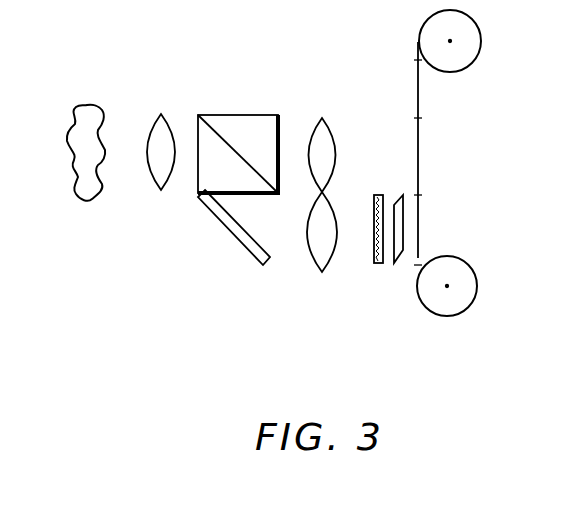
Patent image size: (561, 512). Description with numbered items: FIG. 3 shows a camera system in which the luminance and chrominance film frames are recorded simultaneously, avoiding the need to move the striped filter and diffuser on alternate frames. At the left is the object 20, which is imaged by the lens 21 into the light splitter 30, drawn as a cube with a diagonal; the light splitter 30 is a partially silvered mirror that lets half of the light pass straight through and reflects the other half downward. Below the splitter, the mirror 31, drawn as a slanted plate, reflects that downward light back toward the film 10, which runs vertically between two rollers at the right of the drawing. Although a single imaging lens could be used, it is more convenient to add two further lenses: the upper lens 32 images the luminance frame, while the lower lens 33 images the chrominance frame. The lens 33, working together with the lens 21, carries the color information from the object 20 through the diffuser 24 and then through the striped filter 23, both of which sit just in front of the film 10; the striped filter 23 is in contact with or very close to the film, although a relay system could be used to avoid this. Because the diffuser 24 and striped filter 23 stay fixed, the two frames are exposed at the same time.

The film 10 is at (422, 98).
The object 20 is at (91, 103).
The lens 21 is at (162, 112).
The striped filter 23 is at (398, 265).
The diffuser 24 is at (375, 249).
The light splitter 30 is at (243, 114).
The mirror 31 is at (230, 235).
The lens 32 is at (333, 122).
The lens 33 is at (315, 268).